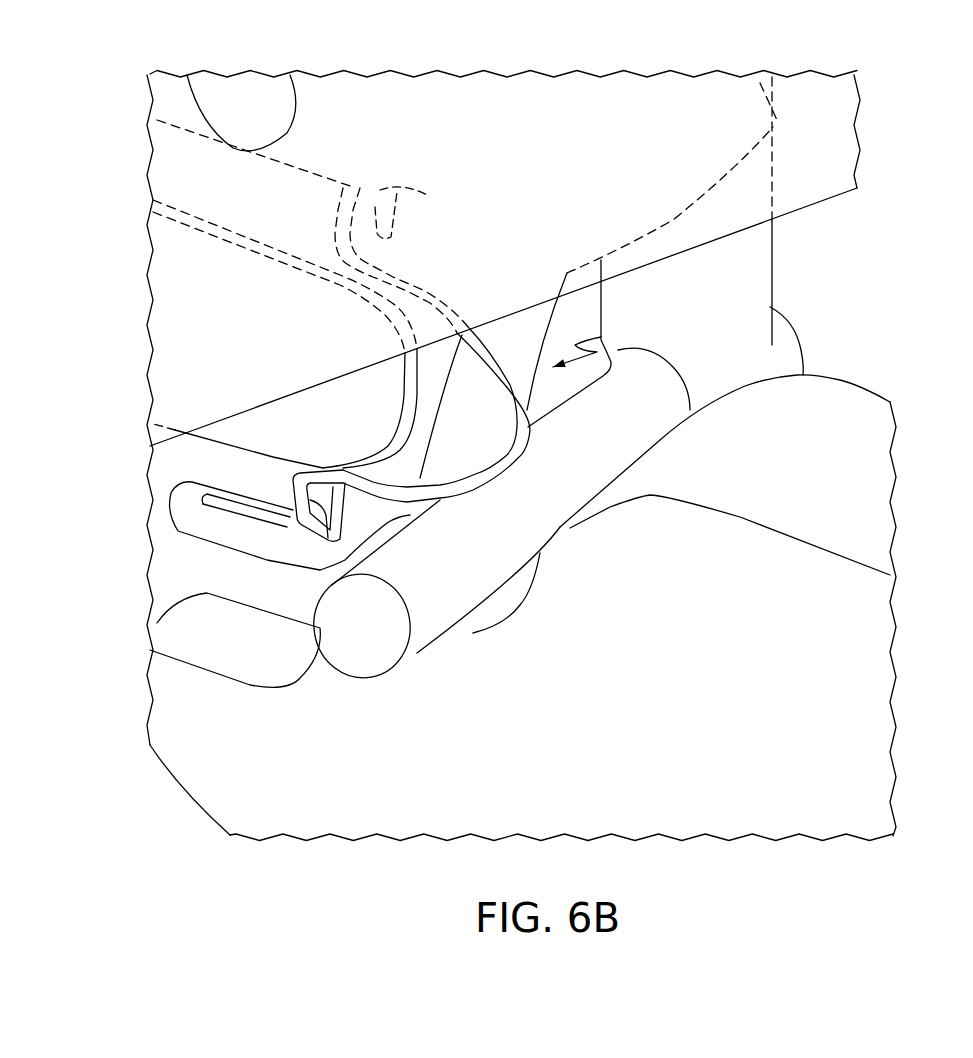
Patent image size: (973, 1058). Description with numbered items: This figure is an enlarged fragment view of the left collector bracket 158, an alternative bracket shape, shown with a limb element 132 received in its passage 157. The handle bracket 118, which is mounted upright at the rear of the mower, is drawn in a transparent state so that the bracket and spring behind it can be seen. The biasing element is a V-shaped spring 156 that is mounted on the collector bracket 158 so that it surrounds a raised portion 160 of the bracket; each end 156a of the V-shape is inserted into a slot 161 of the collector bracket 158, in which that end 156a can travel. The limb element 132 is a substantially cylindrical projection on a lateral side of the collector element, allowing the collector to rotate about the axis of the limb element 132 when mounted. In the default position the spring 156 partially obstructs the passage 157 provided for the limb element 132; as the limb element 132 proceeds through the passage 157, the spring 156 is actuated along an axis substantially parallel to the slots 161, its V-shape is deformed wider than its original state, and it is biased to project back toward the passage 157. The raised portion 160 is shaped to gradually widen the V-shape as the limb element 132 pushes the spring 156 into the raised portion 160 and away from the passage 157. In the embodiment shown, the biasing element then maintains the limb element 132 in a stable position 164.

The handle bracket 118 is at (847, 150).
The limb element 132 is at (660, 430).
The V-shaped spring 156 is at (470, 482).
The end of the V-shaped spring 156a is at (297, 520).
The passage 157 is at (603, 333).
The collector bracket 158 is at (880, 737).
The raised portion 160 is at (256, 440).
The slot 161 is at (210, 495).
The stable position 164 is at (563, 545).